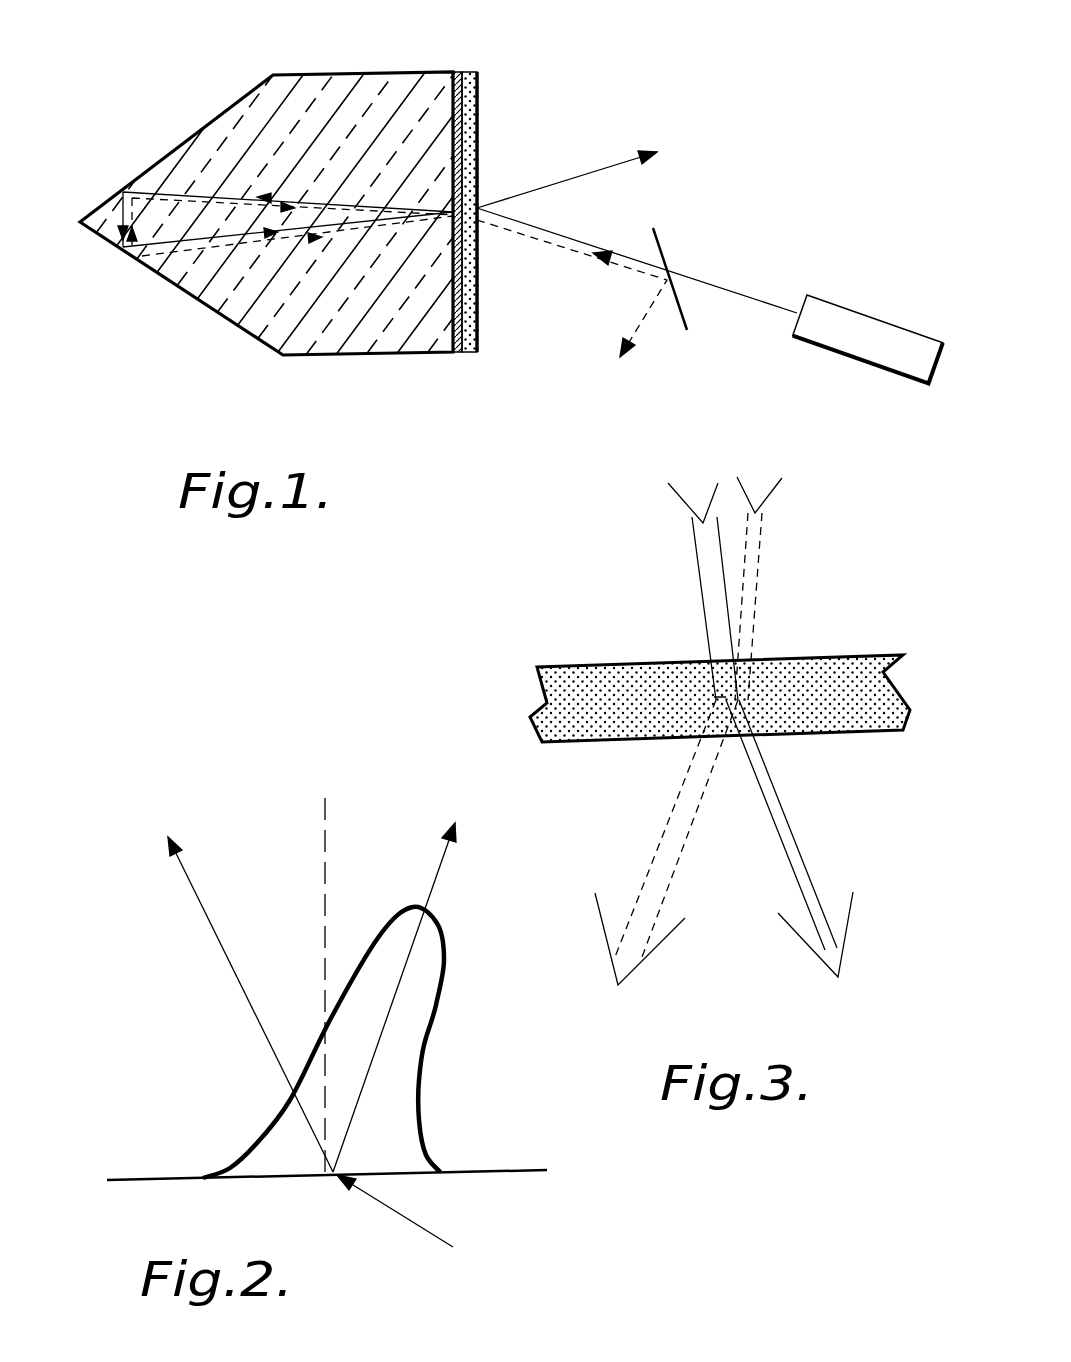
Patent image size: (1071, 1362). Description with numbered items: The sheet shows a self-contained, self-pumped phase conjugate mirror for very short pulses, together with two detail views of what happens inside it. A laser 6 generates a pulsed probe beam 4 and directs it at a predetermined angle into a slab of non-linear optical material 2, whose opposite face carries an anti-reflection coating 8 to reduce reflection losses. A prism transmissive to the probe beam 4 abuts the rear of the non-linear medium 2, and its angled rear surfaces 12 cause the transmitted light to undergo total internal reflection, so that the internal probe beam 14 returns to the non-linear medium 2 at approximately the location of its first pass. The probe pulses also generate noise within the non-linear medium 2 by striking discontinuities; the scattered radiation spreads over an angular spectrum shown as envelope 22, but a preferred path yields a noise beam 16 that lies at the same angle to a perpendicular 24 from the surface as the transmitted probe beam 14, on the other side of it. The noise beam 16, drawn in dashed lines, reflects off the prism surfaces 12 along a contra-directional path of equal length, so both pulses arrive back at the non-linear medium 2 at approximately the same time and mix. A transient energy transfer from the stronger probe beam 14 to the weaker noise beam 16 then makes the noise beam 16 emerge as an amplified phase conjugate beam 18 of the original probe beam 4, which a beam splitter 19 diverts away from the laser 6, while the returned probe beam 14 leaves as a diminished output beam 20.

In FIG. 1, the non-linear optical material 2 is at (478, 80).
In FIG. 3, the non-linear optical material 2 is at (543, 692).
In FIG. 2, the non-linear optical material 2 is at (500, 1171).
In FIG. 1, the probe beam 4 is at (753, 298).
In FIG. 2, the probe beam 4 is at (427, 1227).
In FIG. 1, the laser 6 is at (882, 320).
In FIG. 1, the anti-reflection coating 8 is at (458, 72).
In FIG. 1, the rear surfaces 12 is at (93, 235).
In FIG. 1, the internal probe beam 14 is at (198, 252).
In FIG. 3, the internal probe beam 14 is at (700, 577).
In FIG. 2, the internal probe beam 14 is at (240, 983).
In FIG. 1, the noise beam 16 is at (252, 246).
In FIG. 3, the noise beam 16 is at (757, 570).
In FIG. 2, the noise beam 16 is at (440, 860).
In FIG. 1, the phase conjugate beam 18 is at (568, 253).
In FIG. 3, the phase conjugate beam 18 is at (673, 812).
In FIG. 1, the beam splitter 19 is at (667, 248).
In FIG. 1, the diminished output beam 20 is at (597, 167).
In FIG. 3, the diminished output beam 20 is at (792, 827).
In FIG. 2, the envelope 22 is at (433, 1023).
In FIG. 2, the perpendicular 24 is at (325, 848).